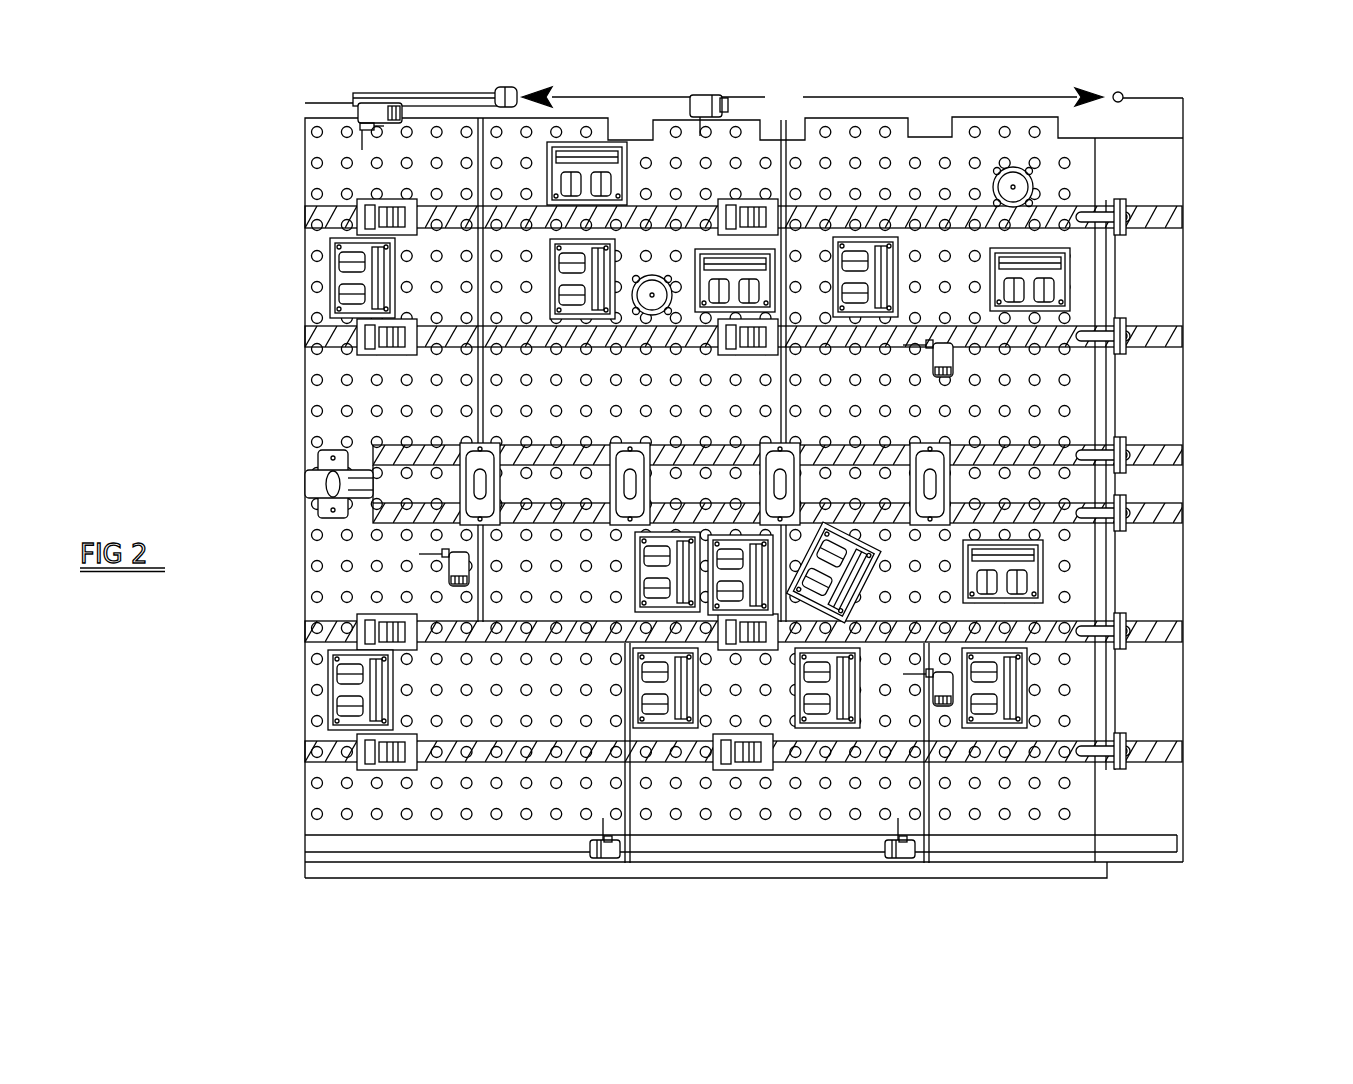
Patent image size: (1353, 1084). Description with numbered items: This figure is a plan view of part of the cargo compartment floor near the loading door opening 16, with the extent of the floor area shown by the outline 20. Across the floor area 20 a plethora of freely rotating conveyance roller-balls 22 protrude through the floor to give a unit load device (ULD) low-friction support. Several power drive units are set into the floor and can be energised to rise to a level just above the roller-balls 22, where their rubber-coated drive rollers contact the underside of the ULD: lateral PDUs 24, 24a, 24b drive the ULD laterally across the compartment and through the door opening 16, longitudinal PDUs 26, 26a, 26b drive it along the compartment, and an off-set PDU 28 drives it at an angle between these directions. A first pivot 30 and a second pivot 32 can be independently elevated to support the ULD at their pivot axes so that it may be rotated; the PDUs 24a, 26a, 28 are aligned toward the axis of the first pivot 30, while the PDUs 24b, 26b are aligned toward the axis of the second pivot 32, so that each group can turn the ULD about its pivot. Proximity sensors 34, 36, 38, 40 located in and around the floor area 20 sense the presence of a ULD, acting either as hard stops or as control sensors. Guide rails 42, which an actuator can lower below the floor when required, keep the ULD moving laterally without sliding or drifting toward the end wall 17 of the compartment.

The loading door opening 16 is at (744, 98).
The end wall 17 is at (1183, 478).
The floor area 20 is at (1160, 867).
The conveyance roller-balls 22 is at (311, 318).
The lateral PDU 24 is at (1005, 572).
The lateral PDU 24a is at (598, 160).
The lateral PDU 24b is at (752, 262).
The longitudinal PDU 26 is at (545, 257).
The longitudinal PDU 26a is at (1010, 677).
The longitudinal PDU 26b is at (660, 575).
The off-set PDU 28 is at (832, 578).
The first pivot 30 is at (1015, 185).
The second pivot 32 is at (522, 208).
The proximity sensor 34 is at (604, 858).
The proximity sensor 36 is at (518, 90).
The proximity sensor 38 is at (362, 115).
The proximity sensor 40 is at (718, 100).
The guide rails 42 is at (1112, 302).